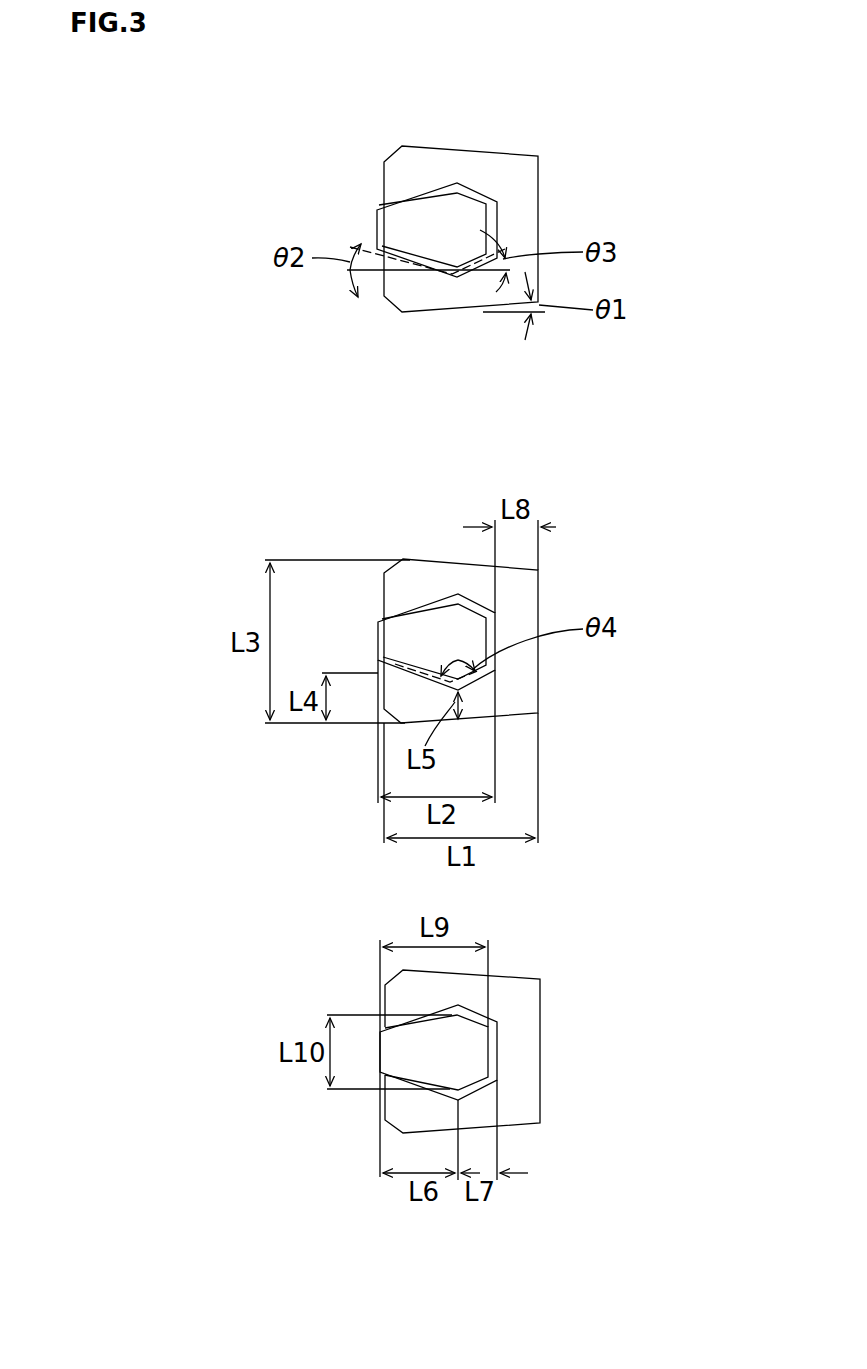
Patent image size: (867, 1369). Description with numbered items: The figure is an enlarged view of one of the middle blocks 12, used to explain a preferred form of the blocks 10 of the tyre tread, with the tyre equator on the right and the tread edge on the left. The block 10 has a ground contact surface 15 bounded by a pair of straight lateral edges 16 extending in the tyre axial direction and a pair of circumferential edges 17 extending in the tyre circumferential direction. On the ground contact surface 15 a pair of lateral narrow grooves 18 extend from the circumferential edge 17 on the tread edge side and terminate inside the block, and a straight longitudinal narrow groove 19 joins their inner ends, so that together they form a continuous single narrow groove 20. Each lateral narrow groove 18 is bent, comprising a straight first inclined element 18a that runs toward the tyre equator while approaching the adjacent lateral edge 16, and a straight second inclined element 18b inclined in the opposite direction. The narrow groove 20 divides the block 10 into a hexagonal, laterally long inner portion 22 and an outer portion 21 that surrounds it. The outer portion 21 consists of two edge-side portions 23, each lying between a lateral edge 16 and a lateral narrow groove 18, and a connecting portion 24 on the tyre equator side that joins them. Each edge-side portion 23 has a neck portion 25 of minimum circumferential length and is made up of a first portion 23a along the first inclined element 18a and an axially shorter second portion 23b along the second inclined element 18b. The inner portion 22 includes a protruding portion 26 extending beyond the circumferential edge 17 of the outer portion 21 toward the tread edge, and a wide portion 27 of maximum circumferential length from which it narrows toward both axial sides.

The block 10 is at (556, 607).
The middle block 12 is at (554, 141).
The ground contact surface 15 is at (420, 218).
The lateral edge 16 is at (458, 172).
The circumferential edge 17 is at (384, 181).
The lateral narrow groove 18 is at (432, 192).
The first inclined element 18a is at (410, 254).
The second inclined element 18b is at (486, 204).
The longitudinal narrow groove 19 is at (495, 627).
The narrow groove 20 is at (417, 605).
The outer portion 21 is at (620, 863).
The inner portion 22 is at (515, 579).
The edge-side portion 23 is at (455, 220).
The first portion 23a is at (424, 1112).
The second portion 23b is at (480, 1110).
The connecting portion 24 is at (522, 655).
The neck portion 25 is at (457, 287).
The protruding portion 26 is at (376, 619).
The wide portion 27 is at (486, 203).